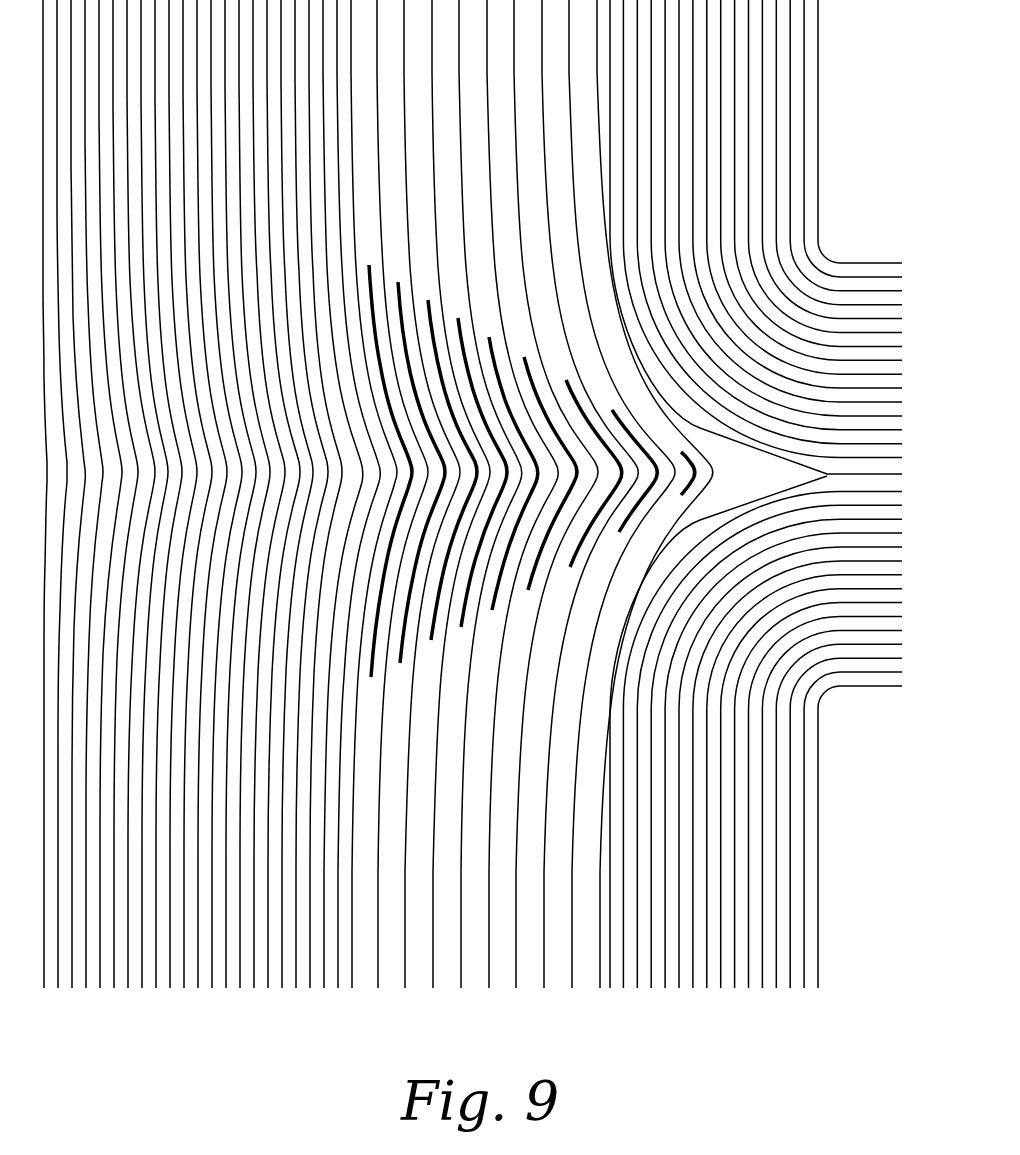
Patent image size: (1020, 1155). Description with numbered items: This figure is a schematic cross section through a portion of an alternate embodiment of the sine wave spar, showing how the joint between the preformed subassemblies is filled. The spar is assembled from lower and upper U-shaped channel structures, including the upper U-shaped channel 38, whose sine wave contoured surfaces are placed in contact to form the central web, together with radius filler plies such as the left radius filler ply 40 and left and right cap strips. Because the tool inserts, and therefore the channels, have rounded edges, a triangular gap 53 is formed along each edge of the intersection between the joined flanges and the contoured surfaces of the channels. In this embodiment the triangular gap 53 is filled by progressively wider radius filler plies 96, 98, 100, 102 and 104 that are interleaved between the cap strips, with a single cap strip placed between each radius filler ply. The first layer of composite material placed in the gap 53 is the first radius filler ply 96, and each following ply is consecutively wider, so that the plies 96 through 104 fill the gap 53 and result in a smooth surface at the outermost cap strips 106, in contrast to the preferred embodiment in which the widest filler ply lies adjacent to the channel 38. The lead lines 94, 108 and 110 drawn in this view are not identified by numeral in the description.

The upper U-shaped channel 38 is at (884, 253).
The left radius filler ply 40 is at (183, 988).
The triangular gap 53 is at (694, 461).
The flow line 94 is at (681, 495).
The first radius filler ply 96 is at (619, 532).
The radius filler ply 98 is at (570, 567).
The radius filler ply 100 is at (528, 590).
The radius filler ply 102 is at (492, 610).
The radius filler ply 104 is at (461, 627).
The outermost cap strips 106 is at (431, 640).
The flow line 108 is at (400, 663).
The flow line 110 is at (371, 677).